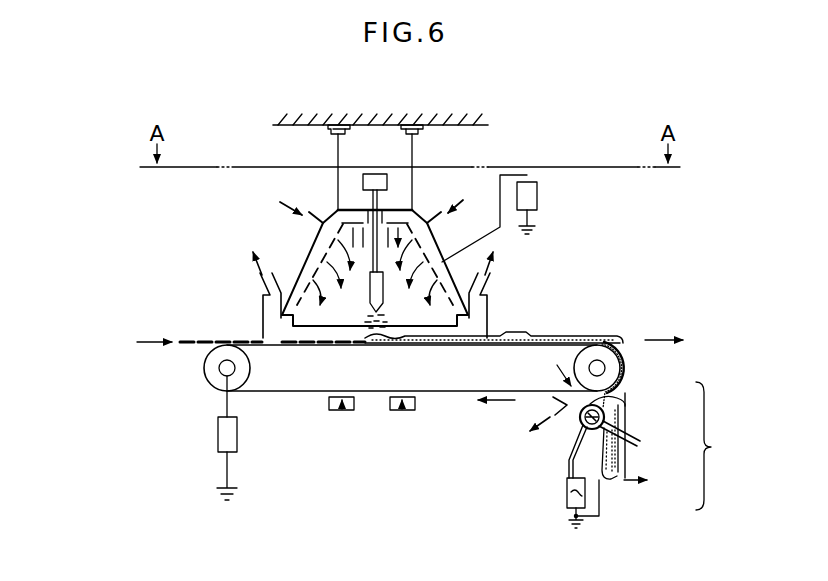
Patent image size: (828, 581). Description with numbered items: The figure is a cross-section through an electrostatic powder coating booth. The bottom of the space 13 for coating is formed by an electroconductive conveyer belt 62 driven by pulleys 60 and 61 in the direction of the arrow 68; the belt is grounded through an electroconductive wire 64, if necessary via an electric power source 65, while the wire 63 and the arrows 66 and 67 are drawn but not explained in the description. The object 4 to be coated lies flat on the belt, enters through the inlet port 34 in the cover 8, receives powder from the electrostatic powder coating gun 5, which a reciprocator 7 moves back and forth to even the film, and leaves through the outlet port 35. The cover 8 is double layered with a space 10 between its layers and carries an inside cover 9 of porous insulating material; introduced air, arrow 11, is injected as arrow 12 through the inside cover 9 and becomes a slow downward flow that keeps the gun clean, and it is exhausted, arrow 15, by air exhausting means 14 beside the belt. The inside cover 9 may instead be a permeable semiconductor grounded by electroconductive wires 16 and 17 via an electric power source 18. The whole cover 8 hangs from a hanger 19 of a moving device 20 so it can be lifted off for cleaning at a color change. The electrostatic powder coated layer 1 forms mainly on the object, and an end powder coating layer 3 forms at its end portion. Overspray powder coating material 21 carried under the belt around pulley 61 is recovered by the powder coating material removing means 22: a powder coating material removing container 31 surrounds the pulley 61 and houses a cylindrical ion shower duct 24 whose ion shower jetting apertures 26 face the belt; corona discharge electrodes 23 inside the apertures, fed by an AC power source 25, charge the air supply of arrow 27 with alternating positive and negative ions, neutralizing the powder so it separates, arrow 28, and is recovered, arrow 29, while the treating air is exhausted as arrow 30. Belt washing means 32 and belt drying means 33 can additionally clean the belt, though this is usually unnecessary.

The electrostatic powder coated layer 1 is at (577, 333).
The end powder coating layer 3 is at (622, 334).
The object to be coated 4 is at (210, 339).
The electrostatic powder coating gun 5 is at (368, 295).
The reciprocator 7 is at (375, 175).
The cover 8 is at (419, 219).
The inside cover 9 is at (437, 243).
The space 10 is at (463, 200).
The arrow (introduced air) 11 is at (294, 207).
The arrow (injected air) 12 is at (417, 218).
The space for coating 13 is at (309, 256).
The air exhausting means 14 is at (268, 307).
The arrow (exhausted air) 15 is at (257, 257).
The electroconductive wire 16 is at (527, 175).
The electroconductive wire 17 is at (530, 223).
The electric power source 18 is at (537, 195).
The hanger 19 is at (336, 153).
The moving device 20 is at (335, 125).
The overspray powder coating material 21 is at (626, 345).
The powder coating material removing means 22 is at (716, 446).
The corona discharge electrodes 23 is at (612, 411).
The cylindrical ion shower duct 24 is at (632, 438).
The AC power source 25 is at (565, 499).
The ion shower jetting apertures 26 is at (612, 402).
The arrow (air supply streams) 27 is at (627, 450).
The arrow (neutralized powder) 28 is at (622, 465).
The arrow (recovered powder) 29 is at (628, 483).
The arrow (exhaust) 30 is at (553, 411).
The powder coating material removing container 31 is at (576, 440).
The belt washing means 32 is at (405, 412).
The belt drying means 33 is at (345, 412).
The inlet port 34 is at (264, 335).
The outlet port 35 is at (494, 333).
The pulley 60 is at (211, 367).
The pulley 61 is at (619, 363).
The electroconductive conveyer belt 62 is at (289, 346).
The wire 63 is at (223, 404).
The electroconductive wire 64 is at (226, 469).
The electric power source 65 is at (234, 432).
The feed direction arrow 66 is at (147, 339).
The exit direction arrow 67 is at (668, 336).
The arrow (belt direction) 68 is at (495, 403).